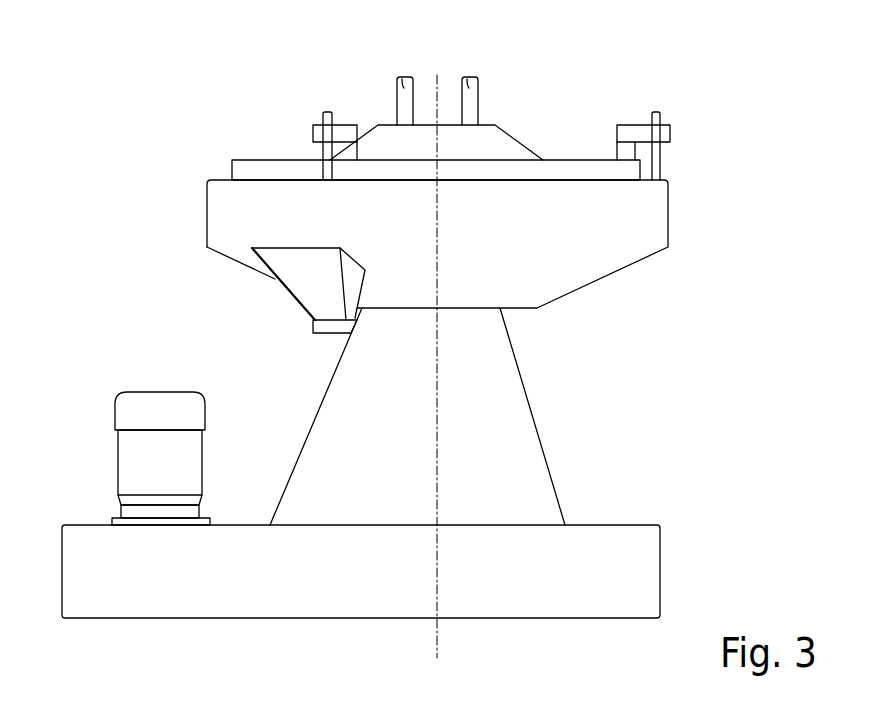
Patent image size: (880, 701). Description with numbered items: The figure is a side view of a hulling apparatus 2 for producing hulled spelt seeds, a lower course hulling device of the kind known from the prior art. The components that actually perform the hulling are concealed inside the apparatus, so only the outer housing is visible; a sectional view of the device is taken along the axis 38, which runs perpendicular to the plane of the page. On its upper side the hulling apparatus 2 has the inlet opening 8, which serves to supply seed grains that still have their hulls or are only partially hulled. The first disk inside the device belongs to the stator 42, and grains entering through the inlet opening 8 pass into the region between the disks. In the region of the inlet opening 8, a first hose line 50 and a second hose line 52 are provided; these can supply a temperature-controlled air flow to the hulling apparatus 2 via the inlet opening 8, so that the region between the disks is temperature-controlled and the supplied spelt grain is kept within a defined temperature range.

The hulling apparatus 2 is at (173, 187).
The inlet opening 8 is at (508, 153).
The axis 38 is at (437, 247).
The stator 42 is at (585, 170).
The first hose line 50 is at (407, 77).
The second hose line 52 is at (467, 77).